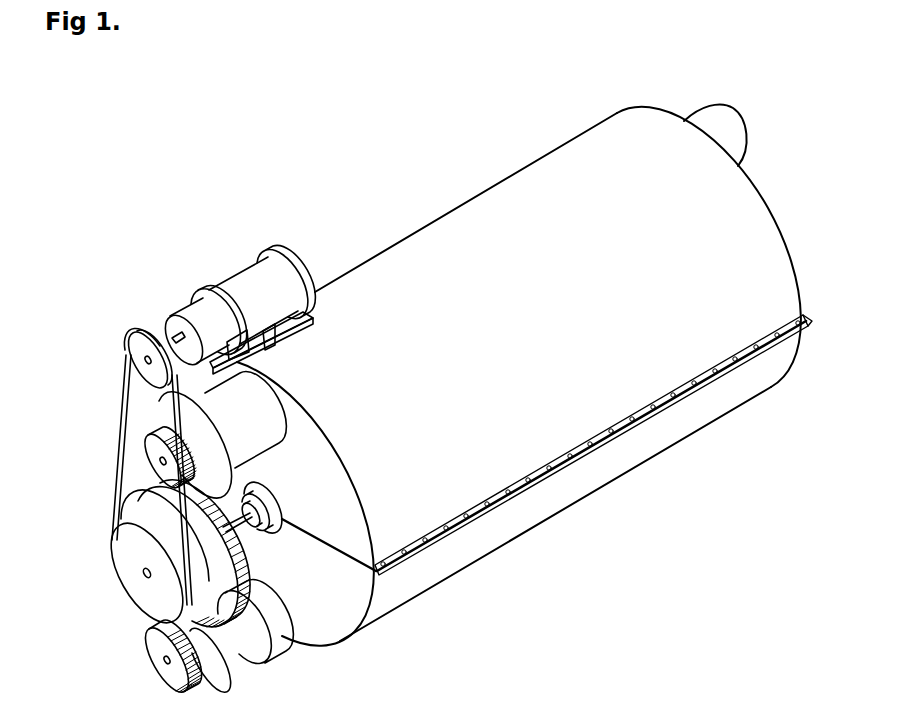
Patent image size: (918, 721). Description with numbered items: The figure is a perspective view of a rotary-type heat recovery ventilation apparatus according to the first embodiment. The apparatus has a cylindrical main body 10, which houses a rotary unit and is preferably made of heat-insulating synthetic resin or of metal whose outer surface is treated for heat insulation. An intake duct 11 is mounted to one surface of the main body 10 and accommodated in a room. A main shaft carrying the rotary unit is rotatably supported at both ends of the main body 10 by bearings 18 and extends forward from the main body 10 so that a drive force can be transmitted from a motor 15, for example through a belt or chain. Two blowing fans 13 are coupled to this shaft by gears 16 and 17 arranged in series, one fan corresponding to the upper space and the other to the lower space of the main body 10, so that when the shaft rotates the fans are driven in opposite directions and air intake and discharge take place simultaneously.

The main body 10 is at (432, 243).
The intake duct 11 is at (715, 118).
The blowing fans 13 is at (252, 453).
The motor 15 is at (247, 280).
The gear 16 is at (137, 505).
The gear 17 is at (153, 445).
The bearings 18 is at (280, 522).